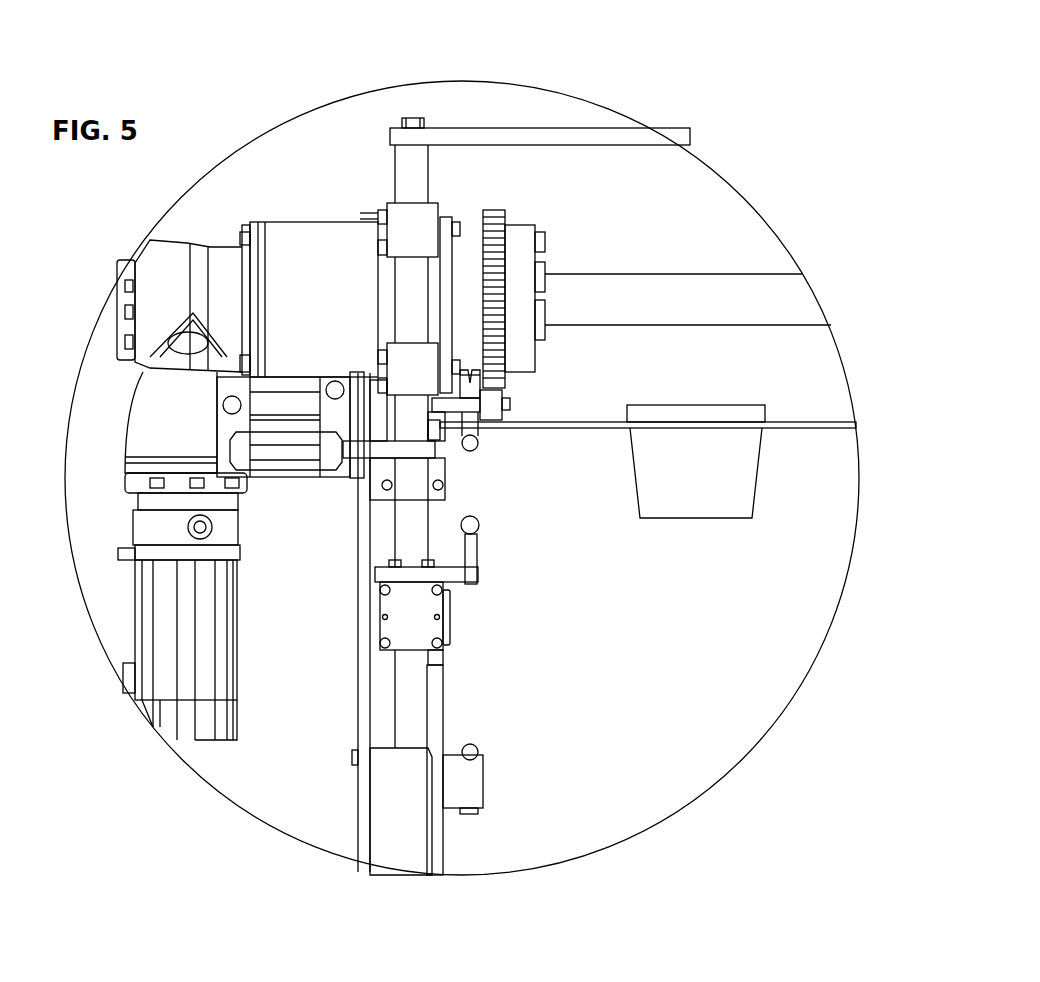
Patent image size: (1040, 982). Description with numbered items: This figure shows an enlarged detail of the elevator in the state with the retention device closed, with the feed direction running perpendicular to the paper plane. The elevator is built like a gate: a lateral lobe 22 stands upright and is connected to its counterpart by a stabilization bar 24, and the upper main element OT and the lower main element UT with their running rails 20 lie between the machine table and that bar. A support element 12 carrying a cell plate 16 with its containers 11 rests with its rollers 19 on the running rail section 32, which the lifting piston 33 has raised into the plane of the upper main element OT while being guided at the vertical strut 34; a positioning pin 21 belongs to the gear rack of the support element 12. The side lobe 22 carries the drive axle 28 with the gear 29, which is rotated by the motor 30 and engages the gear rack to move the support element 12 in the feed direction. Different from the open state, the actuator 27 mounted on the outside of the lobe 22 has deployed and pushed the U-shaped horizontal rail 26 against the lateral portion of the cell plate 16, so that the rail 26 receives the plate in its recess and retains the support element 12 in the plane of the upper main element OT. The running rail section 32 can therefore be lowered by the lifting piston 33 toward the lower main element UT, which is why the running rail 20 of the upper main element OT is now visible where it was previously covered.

The container 11 is at (705, 483).
The support element 12 is at (811, 390).
The cell plate 16 is at (835, 421).
The roller 19 is at (468, 368).
The running rail 20 is at (477, 447).
The positioning pin 21 is at (470, 406).
The lateral lobe 22 is at (366, 595).
The stabilization bar 24 is at (622, 137).
The horizontal rail 26 is at (435, 432).
The actuator 27 is at (328, 400).
The drive axle 28 is at (765, 301).
The gear 29 is at (497, 230).
The motor 30 is at (250, 707).
The running rail section 32 is at (497, 527).
The lifting piston 33 is at (436, 692).
The vertical strut 34 is at (414, 718).
The upper main element OT is at (587, 390).
The lower main element UT is at (501, 805).